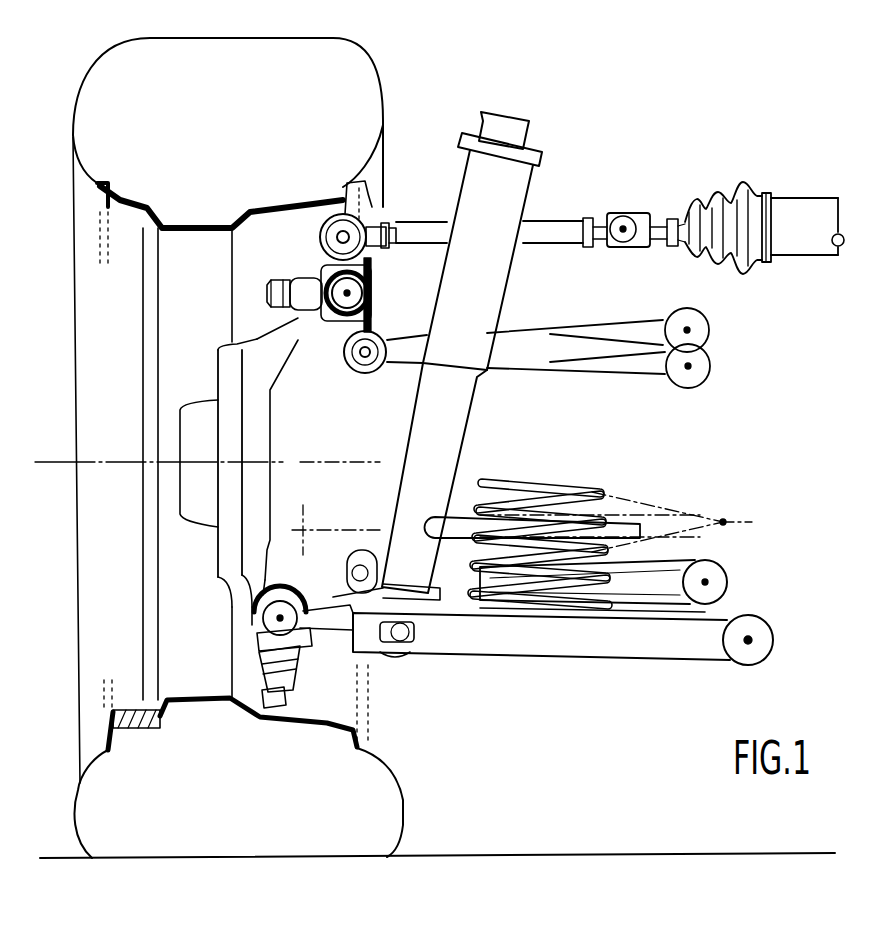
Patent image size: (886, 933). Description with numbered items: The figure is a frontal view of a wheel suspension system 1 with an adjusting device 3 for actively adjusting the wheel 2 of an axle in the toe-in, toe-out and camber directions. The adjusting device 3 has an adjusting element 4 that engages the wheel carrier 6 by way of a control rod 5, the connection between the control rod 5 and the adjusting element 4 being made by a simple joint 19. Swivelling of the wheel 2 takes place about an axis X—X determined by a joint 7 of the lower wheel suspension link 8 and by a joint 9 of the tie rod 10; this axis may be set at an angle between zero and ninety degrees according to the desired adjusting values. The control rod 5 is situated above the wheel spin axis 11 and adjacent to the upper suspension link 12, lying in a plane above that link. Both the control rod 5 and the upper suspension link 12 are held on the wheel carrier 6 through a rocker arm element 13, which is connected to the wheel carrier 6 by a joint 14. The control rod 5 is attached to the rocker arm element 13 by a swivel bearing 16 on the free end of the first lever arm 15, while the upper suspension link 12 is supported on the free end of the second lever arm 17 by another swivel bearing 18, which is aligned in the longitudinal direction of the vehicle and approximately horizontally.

The wheel suspension system 1 is at (708, 427).
The wheel 2 is at (95, 797).
The adjusting device 3 is at (690, 175).
The adjusting element 4 is at (797, 205).
The control rod 5 is at (560, 228).
The wheel carrier 6 is at (263, 342).
The joint of lower wheel suspension link 7 is at (258, 626).
The lower wheel suspension link 8 is at (634, 645).
The joint of tie rod 9 is at (306, 528).
The tie rod 10 is at (602, 522).
The wheel spin axis 11 is at (100, 468).
The upper suspension link 12 is at (550, 330).
The rocker arm element 13 is at (314, 246).
The joint 14 is at (345, 296).
The first lever arm 15 is at (372, 315).
The swivel bearing 16 is at (357, 372).
The second lever arm 17 is at (368, 250).
The swivel bearing 18 is at (372, 195).
The joint 19 is at (628, 205).